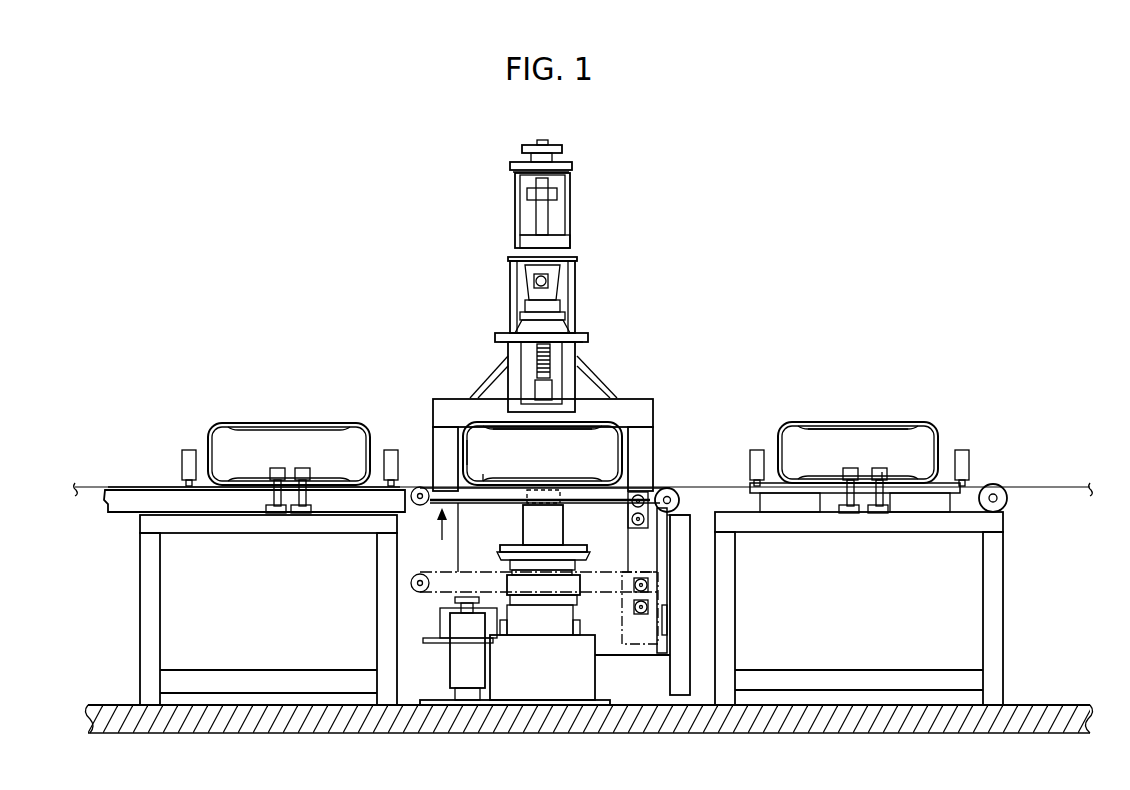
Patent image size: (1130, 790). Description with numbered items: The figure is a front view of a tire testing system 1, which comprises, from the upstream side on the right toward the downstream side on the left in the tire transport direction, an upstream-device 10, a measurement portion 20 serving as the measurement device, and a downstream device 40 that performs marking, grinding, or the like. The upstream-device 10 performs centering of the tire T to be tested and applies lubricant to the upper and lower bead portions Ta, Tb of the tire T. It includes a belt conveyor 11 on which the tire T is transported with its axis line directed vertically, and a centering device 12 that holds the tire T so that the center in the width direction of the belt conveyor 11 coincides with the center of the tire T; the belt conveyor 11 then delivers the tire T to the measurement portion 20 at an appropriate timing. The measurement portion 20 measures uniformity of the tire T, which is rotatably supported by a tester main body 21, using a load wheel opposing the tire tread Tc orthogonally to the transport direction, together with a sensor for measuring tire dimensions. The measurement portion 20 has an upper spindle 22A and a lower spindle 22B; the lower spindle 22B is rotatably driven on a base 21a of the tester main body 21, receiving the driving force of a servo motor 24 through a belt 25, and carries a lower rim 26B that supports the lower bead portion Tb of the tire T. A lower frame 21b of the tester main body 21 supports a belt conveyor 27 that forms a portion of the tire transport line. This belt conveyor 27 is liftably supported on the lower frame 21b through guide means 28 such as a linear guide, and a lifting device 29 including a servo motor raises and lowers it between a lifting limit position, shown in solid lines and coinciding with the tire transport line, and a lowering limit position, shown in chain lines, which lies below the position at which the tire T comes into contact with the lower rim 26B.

The tire testing system 1 is at (852, 195).
The upstream-device 10 is at (837, 370).
The belt conveyor 11 is at (1007, 500).
The centering device 12 is at (963, 462).
The measurement portion 20 is at (605, 226).
The tester main body 21 is at (600, 360).
The base 21a is at (535, 688).
The lower frame 21b is at (680, 612).
The upper spindle 22A is at (553, 308).
The lower spindle 22B is at (553, 525).
The servo motor 24 is at (460, 663).
The belt 25 is at (455, 601).
The lower rim 26B is at (583, 546).
The belt conveyor 27 is at (436, 532).
The guide means 28 is at (665, 537).
The lifting device 29 is at (645, 542).
The downstream device 40 is at (295, 370).
The tire T is at (208, 445).
The upper bead portion Ta is at (575, 422).
The lower bead portion Tb is at (577, 470).
The tire tread Tc is at (462, 453).